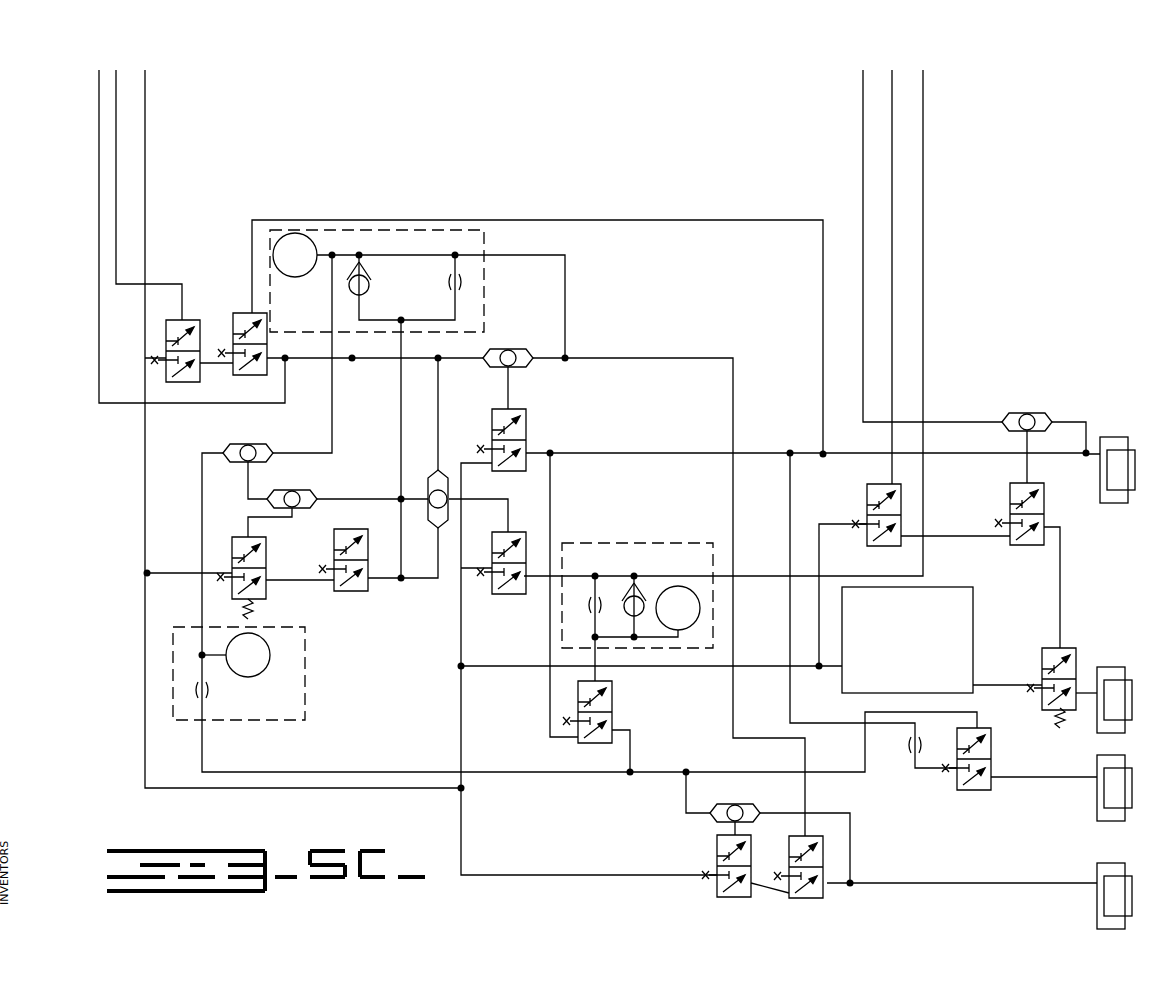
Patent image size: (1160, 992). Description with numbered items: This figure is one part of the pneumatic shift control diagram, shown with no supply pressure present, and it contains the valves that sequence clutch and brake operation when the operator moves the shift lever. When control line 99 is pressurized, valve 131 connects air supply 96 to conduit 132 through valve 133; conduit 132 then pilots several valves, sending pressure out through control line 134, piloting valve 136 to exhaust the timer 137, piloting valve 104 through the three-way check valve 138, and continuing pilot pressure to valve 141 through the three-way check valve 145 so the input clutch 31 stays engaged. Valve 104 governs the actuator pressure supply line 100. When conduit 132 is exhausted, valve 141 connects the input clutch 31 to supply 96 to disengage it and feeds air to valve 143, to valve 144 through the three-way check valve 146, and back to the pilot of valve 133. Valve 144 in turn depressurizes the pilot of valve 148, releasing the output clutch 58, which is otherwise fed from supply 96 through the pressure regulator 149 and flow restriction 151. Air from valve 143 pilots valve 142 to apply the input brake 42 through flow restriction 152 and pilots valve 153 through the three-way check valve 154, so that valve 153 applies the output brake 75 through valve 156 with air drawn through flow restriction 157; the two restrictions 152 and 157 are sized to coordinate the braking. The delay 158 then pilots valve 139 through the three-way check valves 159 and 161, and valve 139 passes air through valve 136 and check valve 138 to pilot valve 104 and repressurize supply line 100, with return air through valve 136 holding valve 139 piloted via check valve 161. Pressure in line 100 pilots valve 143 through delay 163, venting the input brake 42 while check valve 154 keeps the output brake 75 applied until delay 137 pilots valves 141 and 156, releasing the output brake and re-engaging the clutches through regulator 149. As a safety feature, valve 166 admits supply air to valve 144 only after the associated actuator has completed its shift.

The input clutch 31 is at (1128, 500).
The input brake 42 is at (1125, 805).
The output clutch 58 is at (1130, 682).
The output brake 75 is at (1104, 890).
The air supply 96 is at (146, 172).
The control line 99 is at (113, 128).
The actuator pressure supply line 100 is at (923, 143).
The valve 104 is at (510, 591).
The valve 131 is at (183, 320).
The conduit 132 is at (384, 351).
The valve 133 is at (258, 376).
The control line 134 is at (90, 92).
The valve 136 is at (350, 593).
The timer 137 is at (484, 291).
The three-way check valve 138 is at (449, 490).
The valve 139 is at (262, 544).
The valve 141 is at (512, 409).
The valve 142 is at (972, 792).
The valve 143 is at (612, 713).
The valve 144 is at (1008, 484).
The three-way check valve 145 is at (493, 352).
The three-way check valve 146 is at (1037, 414).
The valve 148 is at (1042, 650).
The pressure regulator 149 is at (932, 590).
The flow restriction 151 is at (1018, 670).
The flow restriction 152 is at (911, 756).
The valve 153 is at (717, 847).
The three-way check valve 154 is at (745, 806).
The valve 156 is at (809, 900).
The flow restriction 157 is at (588, 870).
The delay 158 is at (305, 670).
The three-way check valve 159 is at (252, 446).
The three-way check valve 161 is at (292, 491).
The delay 163 is at (617, 545).
The valve 166 is at (867, 501).